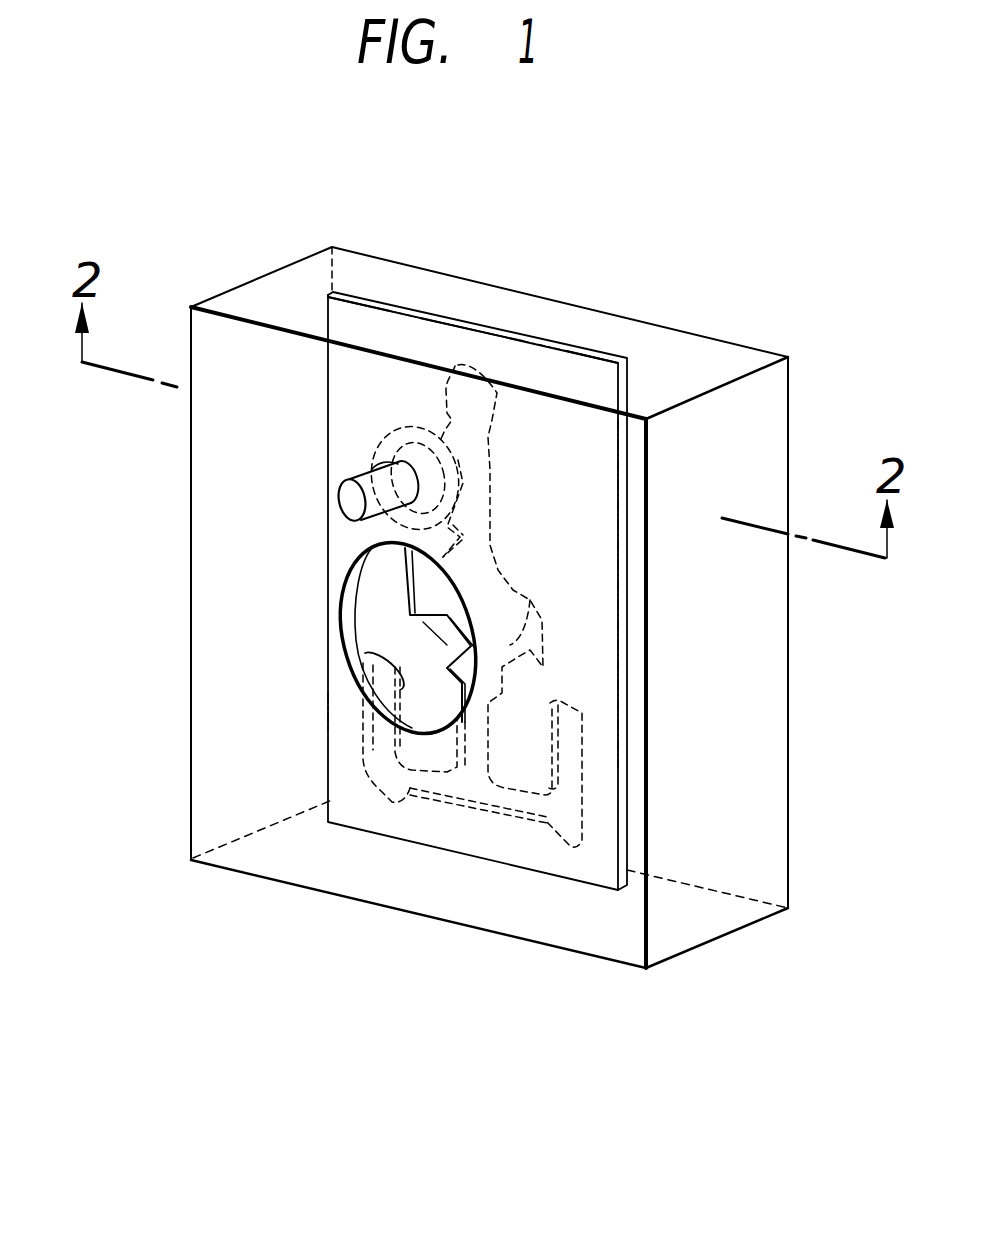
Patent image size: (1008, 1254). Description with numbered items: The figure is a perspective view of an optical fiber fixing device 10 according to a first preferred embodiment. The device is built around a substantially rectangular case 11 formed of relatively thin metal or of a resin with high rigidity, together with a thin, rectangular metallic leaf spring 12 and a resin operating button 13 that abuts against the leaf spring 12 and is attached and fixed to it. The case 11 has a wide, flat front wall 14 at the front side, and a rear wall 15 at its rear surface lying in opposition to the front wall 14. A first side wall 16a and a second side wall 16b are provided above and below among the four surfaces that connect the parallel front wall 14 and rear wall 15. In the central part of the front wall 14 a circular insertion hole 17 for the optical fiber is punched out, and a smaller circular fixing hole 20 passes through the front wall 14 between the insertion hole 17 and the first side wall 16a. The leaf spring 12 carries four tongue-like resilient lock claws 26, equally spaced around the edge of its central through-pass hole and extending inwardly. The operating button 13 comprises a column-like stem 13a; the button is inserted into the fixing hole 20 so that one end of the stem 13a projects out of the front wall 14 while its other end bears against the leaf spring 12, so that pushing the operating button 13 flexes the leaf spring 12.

The optical fiber fixing device 10 is at (491, 610).
The case 11 is at (683, 332).
The leaf spring 12 is at (302, 743).
The operating button 13 is at (253, 509).
The stem 13a is at (345, 498).
The front wall 14 is at (228, 767).
The rear wall 15 is at (790, 695).
The first side wall 16a is at (278, 281).
The second side wall 16b is at (577, 953).
The insertion hole 17 is at (355, 635).
The fixing hole 20 is at (393, 463).
The resilient lock claws 26 is at (437, 642).